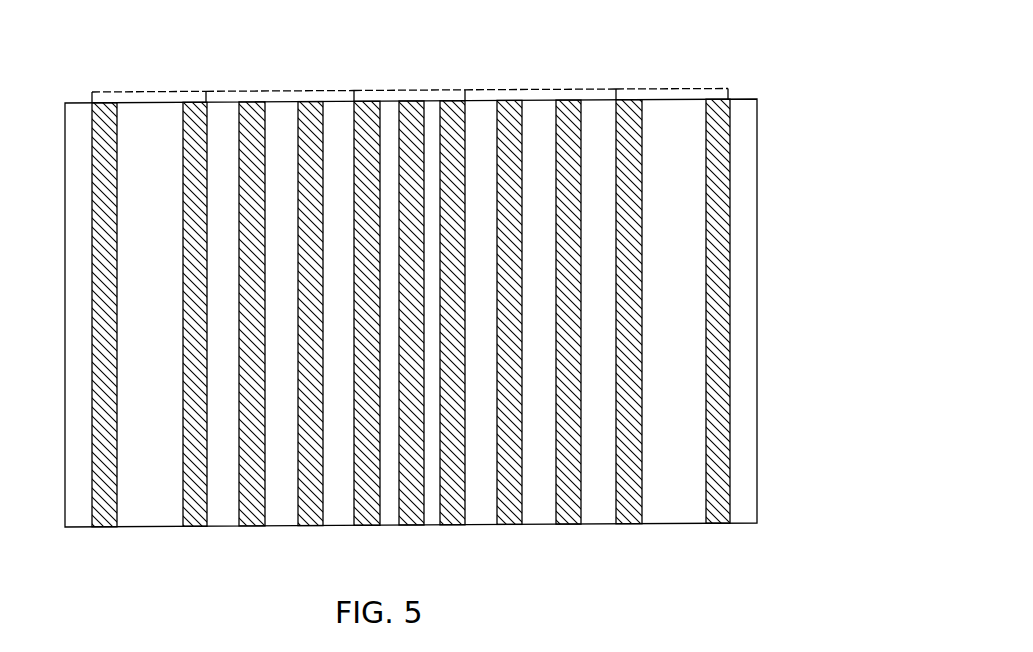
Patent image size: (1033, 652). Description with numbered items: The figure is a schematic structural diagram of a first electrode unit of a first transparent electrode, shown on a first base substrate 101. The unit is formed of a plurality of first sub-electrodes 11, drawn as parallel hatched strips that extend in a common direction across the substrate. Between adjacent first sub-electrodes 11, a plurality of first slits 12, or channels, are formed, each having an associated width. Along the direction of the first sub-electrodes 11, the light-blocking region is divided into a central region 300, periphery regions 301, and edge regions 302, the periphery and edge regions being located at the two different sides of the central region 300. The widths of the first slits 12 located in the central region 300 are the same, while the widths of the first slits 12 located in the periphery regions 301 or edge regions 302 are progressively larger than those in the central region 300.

The first sub-electrodes 11 is at (367, 107).
The first slits 12 is at (683, 147).
The first base substrate 101 is at (745, 220).
The central region 300 is at (409, 71).
The periphery regions 301 is at (279, 72).
The edge regions 302 is at (147, 72).